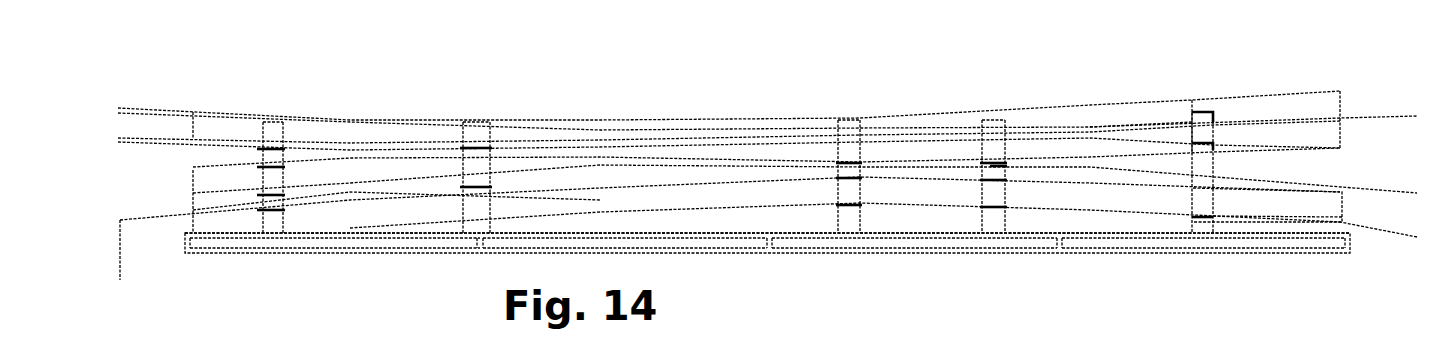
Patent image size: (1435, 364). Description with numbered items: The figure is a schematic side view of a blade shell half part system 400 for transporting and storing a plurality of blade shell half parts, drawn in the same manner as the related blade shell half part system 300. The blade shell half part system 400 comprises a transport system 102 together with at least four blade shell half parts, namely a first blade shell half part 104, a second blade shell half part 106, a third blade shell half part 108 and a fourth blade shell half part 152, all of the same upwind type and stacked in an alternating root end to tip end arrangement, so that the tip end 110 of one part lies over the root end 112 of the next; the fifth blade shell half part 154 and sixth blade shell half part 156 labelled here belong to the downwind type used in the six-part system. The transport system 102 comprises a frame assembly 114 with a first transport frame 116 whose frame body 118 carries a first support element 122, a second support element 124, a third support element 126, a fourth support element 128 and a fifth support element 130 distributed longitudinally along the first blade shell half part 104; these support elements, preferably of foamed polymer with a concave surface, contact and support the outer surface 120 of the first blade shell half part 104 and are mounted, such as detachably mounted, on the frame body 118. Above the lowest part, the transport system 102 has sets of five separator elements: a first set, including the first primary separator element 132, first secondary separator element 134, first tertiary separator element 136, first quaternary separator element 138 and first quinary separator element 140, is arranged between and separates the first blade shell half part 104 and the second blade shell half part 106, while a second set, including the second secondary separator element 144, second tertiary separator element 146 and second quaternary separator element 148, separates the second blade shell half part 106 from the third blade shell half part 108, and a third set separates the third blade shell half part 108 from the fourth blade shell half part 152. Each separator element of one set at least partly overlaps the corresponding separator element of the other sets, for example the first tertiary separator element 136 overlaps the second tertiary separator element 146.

The blade shell half part system 400 is at (226, 88).
The blade shell half part system 300 is at (203, 340).
The transport system 102 is at (1163, 253).
The first blade shell half part 104 is at (1393, 233).
The second blade shell half part 106 is at (1323, 215).
The third blade shell half part 108 is at (1383, 190).
The tip end 110 is at (1413, 114).
The root end 112 is at (197, 171).
The frame assembly 114 is at (1087, 248).
The first transport frame 116 is at (727, 248).
The frame body 118 is at (892, 240).
The outer surface 120 is at (350, 222).
The first support element 122 is at (272, 227).
The second support element 124 is at (478, 220).
The third support element 126 is at (850, 220).
The fourth support element 128 is at (992, 227).
The fifth support element 130 is at (1207, 225).
The first primary separator element 132 is at (273, 202).
The first secondary separator element 134 is at (480, 190).
The first tertiary separator element 136 is at (852, 202).
The first quaternary separator element 138 is at (990, 190).
The first quinary separator element 140 is at (1207, 203).
The second secondary separator element 144 is at (478, 165).
The second tertiary separator element 146 is at (848, 163).
The second quaternary separator element 148 is at (990, 166).
The fourth blade shell half part 152 is at (185, 138).
The fifth blade shell half part 154 is at (1368, 122).
The sixth blade shell half part 156 is at (1150, 120).